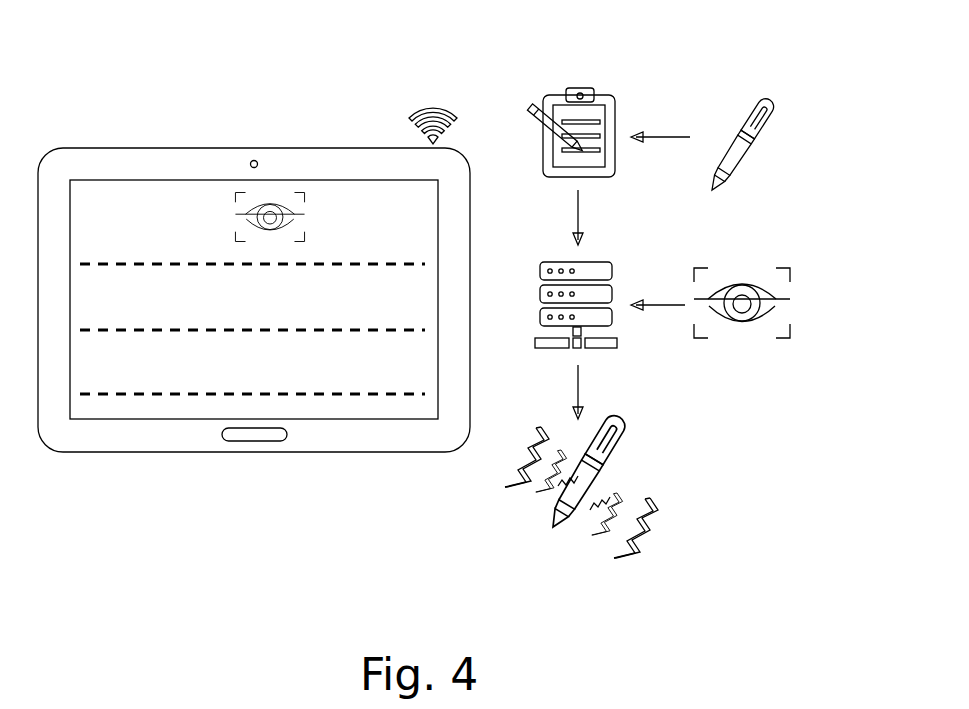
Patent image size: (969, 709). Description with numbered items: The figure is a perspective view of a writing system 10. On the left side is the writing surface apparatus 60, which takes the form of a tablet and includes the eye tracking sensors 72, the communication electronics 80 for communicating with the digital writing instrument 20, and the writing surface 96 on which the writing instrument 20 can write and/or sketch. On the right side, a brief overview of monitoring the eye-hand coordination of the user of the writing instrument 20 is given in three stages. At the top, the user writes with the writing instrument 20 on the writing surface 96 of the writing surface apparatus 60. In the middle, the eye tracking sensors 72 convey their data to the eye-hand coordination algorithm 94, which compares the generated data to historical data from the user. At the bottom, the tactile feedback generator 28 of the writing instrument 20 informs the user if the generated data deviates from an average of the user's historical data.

The writing system 10 is at (466, 513).
The digital writing instrument 20 is at (742, 150).
The tactile feedback generator 28 is at (582, 526).
The writing surface apparatus 60 is at (103, 455).
The eye tracking sensors 72 is at (248, 158).
The communication electronics 80 is at (410, 130).
The eye-hand coordination algorithm 94 is at (597, 268).
The writing surface 96 is at (385, 358).